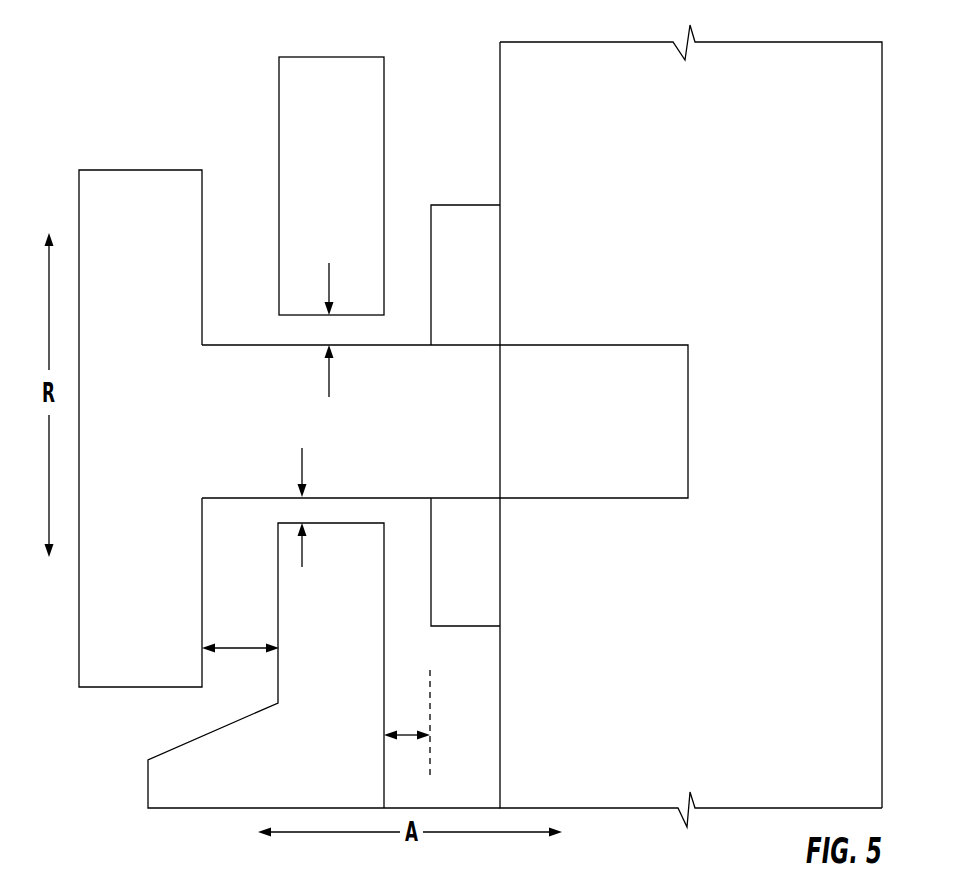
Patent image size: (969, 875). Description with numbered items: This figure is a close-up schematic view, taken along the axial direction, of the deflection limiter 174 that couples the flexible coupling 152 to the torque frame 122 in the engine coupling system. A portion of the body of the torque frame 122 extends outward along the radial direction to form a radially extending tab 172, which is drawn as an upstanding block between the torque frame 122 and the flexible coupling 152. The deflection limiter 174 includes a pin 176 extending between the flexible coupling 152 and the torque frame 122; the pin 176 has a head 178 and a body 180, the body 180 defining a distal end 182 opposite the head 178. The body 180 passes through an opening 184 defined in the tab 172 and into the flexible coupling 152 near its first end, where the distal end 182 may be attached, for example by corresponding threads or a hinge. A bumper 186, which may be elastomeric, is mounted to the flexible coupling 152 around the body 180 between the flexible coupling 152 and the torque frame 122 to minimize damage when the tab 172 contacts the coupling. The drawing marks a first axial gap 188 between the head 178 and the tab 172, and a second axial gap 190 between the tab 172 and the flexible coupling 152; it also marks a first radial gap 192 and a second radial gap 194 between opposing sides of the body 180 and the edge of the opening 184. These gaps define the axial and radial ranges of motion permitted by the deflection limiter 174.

The torque frame 122 is at (240, 787).
The flexible coupling 152 is at (766, 60).
The radially extending tab 172 is at (355, 123).
The deflection limiter 174 is at (353, 350).
The pin 176 is at (112, 228).
The head 178 is at (102, 603).
The body 180 is at (430, 388).
The distal end 182 is at (728, 393).
The opening 184 is at (391, 331).
The bumper 186 is at (468, 587).
The first axial gap 188 is at (238, 650).
The second axial gap 190 is at (410, 727).
The first radial gap 192 is at (330, 280).
The second radial gap 194 is at (303, 468).